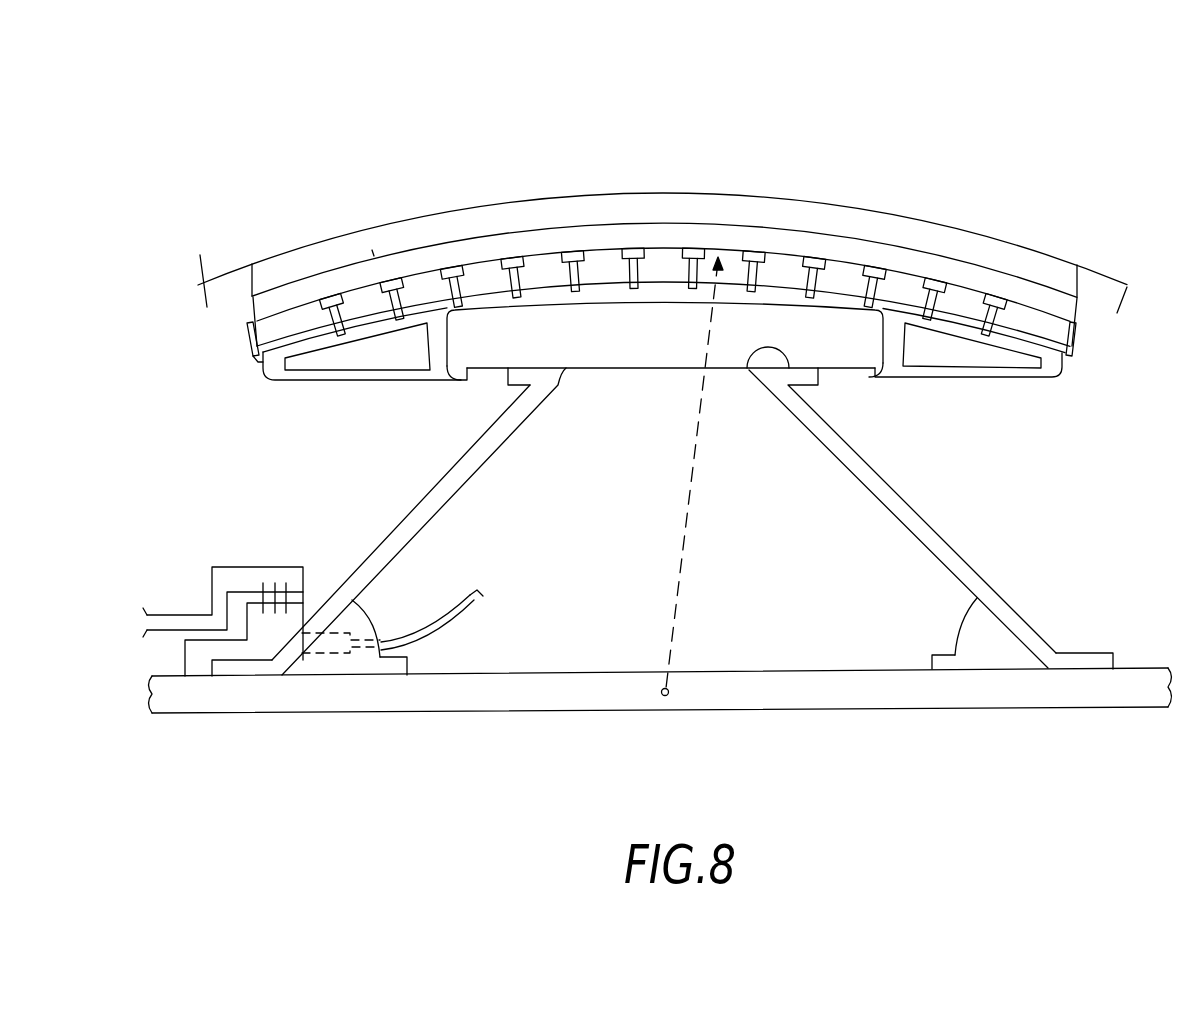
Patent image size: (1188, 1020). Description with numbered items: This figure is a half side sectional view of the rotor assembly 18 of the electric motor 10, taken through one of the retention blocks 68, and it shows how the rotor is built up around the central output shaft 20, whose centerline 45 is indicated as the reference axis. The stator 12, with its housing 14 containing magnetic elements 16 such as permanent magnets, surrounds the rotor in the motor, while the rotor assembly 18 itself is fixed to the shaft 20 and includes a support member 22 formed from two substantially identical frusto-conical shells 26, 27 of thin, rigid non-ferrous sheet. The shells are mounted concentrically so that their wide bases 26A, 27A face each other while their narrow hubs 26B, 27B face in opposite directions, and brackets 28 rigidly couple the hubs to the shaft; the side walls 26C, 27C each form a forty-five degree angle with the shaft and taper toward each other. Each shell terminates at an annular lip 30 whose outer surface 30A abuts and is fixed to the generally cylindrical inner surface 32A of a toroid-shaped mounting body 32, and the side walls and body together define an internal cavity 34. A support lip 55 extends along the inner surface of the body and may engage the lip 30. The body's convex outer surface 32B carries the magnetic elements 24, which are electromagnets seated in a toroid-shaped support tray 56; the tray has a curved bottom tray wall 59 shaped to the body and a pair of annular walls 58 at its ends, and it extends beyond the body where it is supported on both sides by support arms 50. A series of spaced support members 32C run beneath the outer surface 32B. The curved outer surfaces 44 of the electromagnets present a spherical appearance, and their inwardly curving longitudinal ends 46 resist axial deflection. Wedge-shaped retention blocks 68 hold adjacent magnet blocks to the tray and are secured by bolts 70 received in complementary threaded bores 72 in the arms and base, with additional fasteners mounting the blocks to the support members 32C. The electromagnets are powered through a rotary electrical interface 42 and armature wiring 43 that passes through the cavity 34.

The electric motor 10 is at (758, 132).
The stator 12 is at (1112, 262).
The stator housing 14 is at (1097, 272).
The magnetic elements 16 is at (955, 245).
The rotor assembly 18 is at (1000, 493).
The central output shaft 20 is at (1063, 697).
The support member 22 is at (897, 538).
The magnetic elements 24 is at (372, 250).
The shell 26 is at (432, 493).
The base 26A is at (247, 682).
The hub 26B is at (517, 393).
The side wall 26C is at (400, 533).
The shell 27 is at (914, 505).
The base 27A is at (1092, 655).
The hub 27B is at (768, 398).
The side wall 27C is at (947, 550).
The bracket 28 is at (956, 632).
The annular lip 30 is at (798, 390).
The outer surface 30A is at (754, 360).
The mounting body 32 is at (652, 292).
The inner surface 32A is at (603, 372).
The outer surface 32B is at (573, 296).
The support members 32C is at (650, 295).
The cavity 34 is at (580, 614).
The rotary electrical interface 42 is at (250, 563).
The armature wiring 43 is at (472, 600).
The outer surface 44 is at (484, 292).
The centerline 45 is at (680, 697).
The longitudinal ends 46 is at (278, 320).
The support arms 50 is at (290, 392).
The support lip 55 is at (440, 413).
The support tray 56 is at (244, 326).
The annular walls 58 is at (258, 354).
The bottom tray wall 59 is at (533, 282).
The retention block 68 is at (296, 153).
The bolts 70 is at (436, 252).
The threaded bores 72 is at (434, 256).